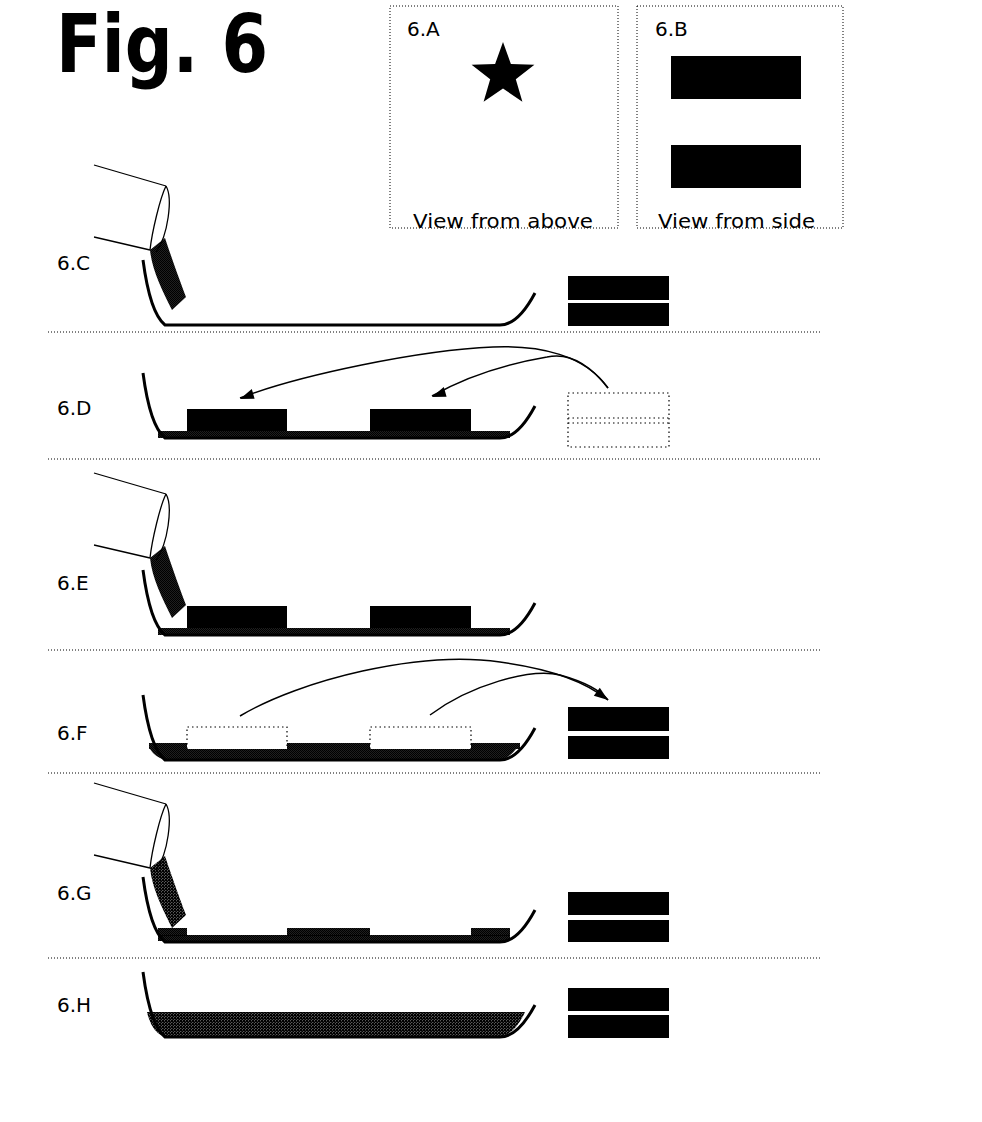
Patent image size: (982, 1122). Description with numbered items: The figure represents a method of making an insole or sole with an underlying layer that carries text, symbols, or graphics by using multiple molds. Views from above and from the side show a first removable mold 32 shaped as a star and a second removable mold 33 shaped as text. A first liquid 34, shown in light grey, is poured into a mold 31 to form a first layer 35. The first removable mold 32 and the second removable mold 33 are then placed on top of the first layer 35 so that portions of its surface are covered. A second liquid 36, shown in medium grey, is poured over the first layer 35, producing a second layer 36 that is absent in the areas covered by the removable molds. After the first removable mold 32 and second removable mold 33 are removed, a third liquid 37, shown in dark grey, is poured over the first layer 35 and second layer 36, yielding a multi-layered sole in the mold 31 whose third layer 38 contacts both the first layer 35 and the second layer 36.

The mold 31 is at (324, 650).
The first removable mold 32 is at (511, 527).
The second removable mold 33 is at (602, 587).
The first liquid 34 is at (185, 274).
The first layer 35 is at (485, 1024).
The second liquid / second layer 36 is at (351, 1024).
The third liquid 37 is at (180, 892).
The third layer 38 is at (336, 1013).